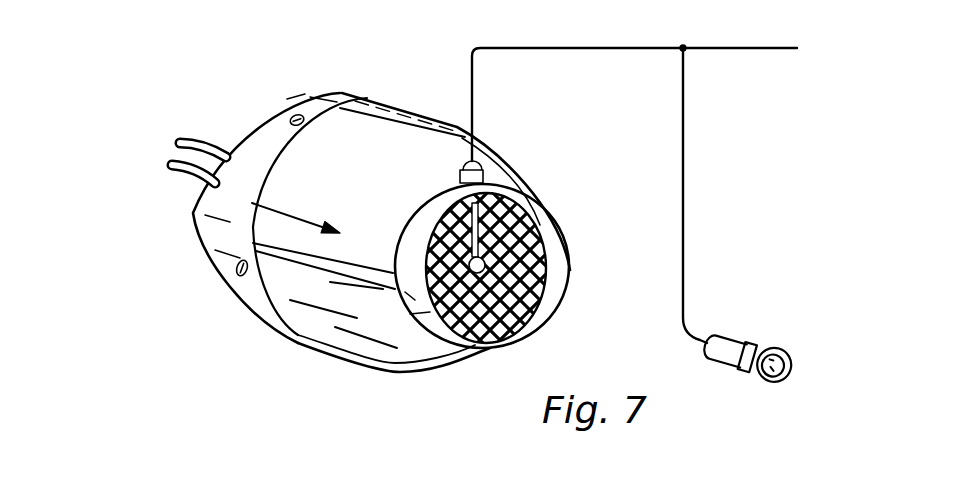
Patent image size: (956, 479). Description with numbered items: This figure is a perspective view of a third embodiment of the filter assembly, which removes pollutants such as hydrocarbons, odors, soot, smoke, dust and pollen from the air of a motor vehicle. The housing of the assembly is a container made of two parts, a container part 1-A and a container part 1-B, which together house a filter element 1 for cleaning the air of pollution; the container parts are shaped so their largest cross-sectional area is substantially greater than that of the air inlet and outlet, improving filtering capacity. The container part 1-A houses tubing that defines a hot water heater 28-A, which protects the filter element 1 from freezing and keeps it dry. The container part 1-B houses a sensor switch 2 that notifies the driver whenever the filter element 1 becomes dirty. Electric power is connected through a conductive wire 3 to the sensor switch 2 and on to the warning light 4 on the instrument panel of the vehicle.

The filter element 1 is at (550, 289).
The container part 1-A is at (320, 95).
The container part 1-B is at (407, 108).
The sensor switch 2 is at (514, 238).
The conductive wire 3 is at (703, 44).
The warning light 4 is at (747, 337).
The hot water heater 28-A is at (172, 165).